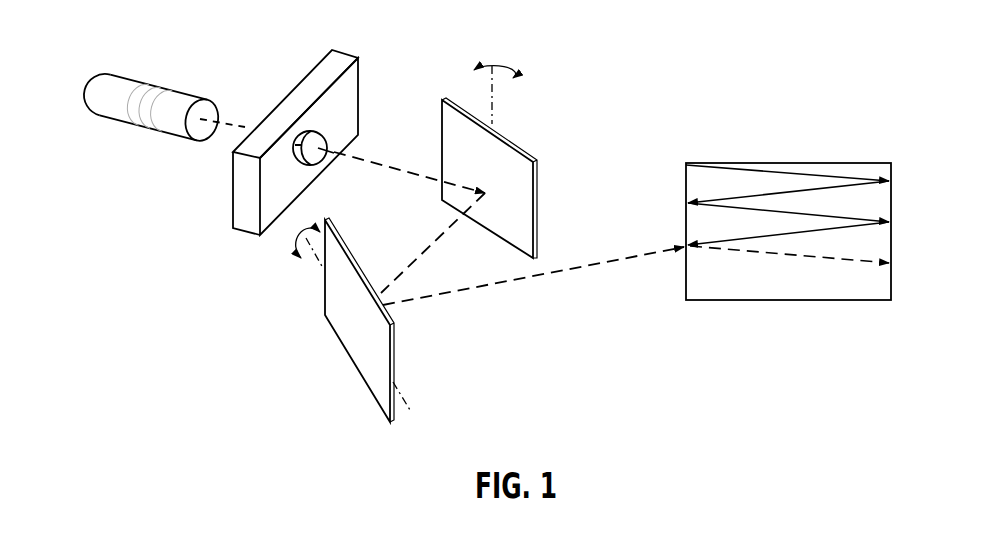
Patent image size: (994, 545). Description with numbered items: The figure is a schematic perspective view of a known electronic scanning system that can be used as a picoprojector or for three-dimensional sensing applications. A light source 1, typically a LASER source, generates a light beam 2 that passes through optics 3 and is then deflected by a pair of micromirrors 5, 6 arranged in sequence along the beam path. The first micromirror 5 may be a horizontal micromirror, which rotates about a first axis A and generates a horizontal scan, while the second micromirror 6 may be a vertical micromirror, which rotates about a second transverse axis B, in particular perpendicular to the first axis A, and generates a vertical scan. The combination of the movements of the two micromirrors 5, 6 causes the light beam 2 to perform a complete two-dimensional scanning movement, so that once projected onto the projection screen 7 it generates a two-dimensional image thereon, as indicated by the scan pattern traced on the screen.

The light source 1 is at (120, 128).
The light beam 2 is at (242, 120).
The optics 3 is at (343, 104).
The first micromirror 5 is at (519, 205).
The second micromirror 6 is at (368, 332).
The projection screen 7 is at (768, 278).
The first axis A is at (493, 100).
The second transverse axis B is at (322, 268).